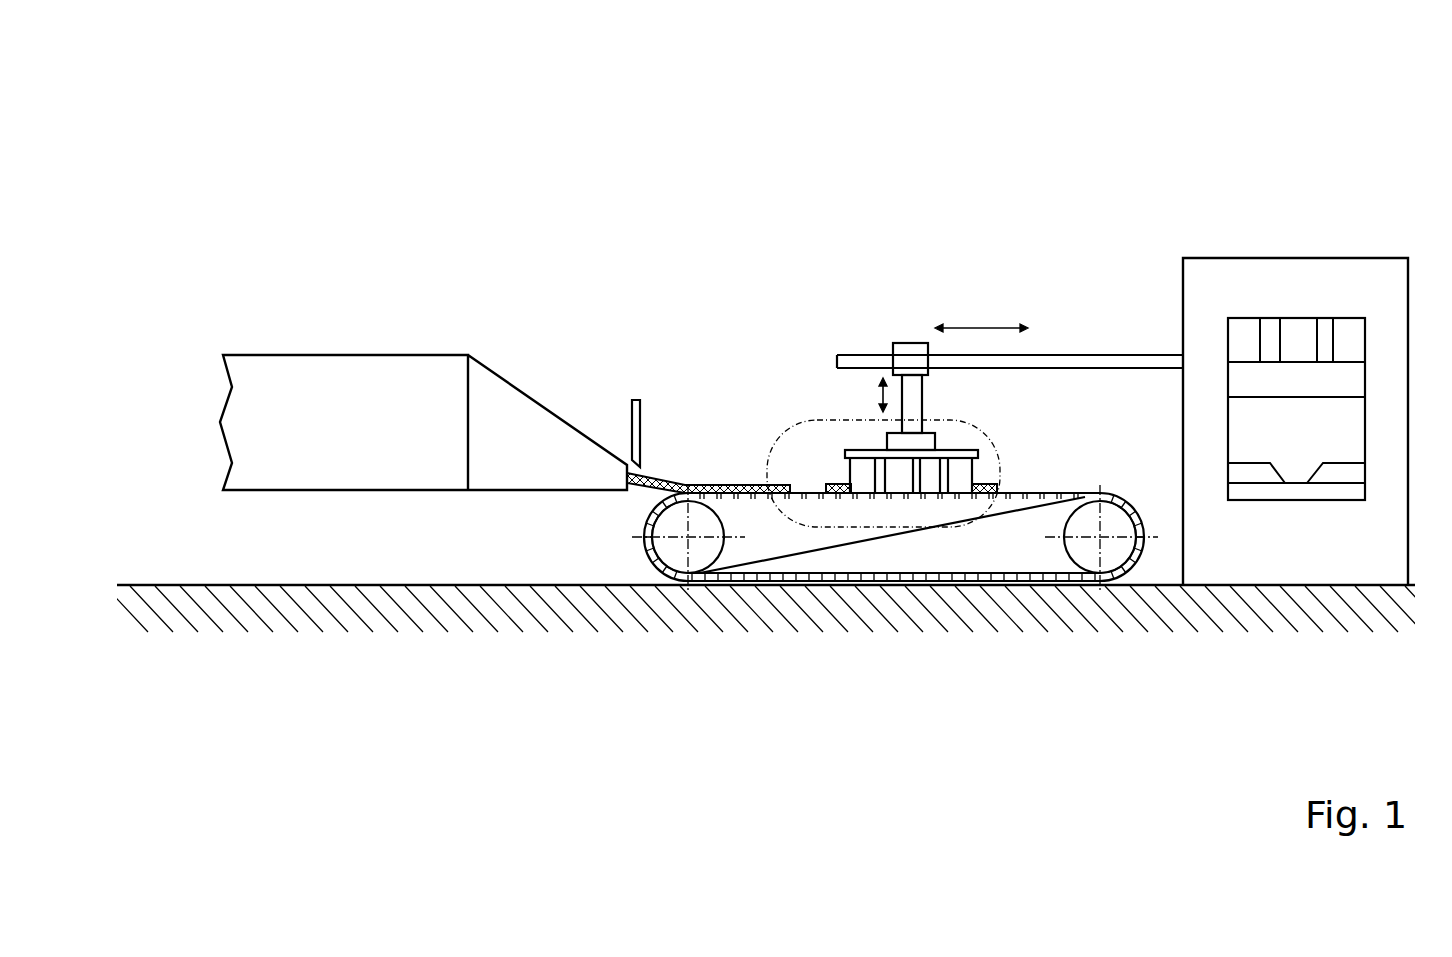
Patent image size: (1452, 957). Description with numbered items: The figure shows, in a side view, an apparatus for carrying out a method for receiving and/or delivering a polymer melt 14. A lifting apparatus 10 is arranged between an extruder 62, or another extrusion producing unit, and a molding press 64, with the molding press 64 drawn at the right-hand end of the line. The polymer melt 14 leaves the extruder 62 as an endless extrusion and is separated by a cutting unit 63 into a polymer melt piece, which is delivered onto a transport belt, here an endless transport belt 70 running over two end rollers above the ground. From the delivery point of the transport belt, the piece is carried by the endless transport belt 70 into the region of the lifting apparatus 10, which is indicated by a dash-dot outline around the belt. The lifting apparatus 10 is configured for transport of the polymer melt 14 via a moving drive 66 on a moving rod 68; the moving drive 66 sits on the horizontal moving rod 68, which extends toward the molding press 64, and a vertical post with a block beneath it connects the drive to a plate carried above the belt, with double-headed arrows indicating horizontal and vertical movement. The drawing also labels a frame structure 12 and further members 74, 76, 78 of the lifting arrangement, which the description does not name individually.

The lifting apparatus 10 is at (997, 286).
The mold frame 12 is at (860, 470).
The polymer melt 14 is at (683, 490).
The extruder 62 is at (333, 342).
The cutting unit 63 is at (633, 423).
The molding press 64 is at (1327, 252).
The moving drive 66 is at (902, 362).
The moving rod 68 is at (1090, 360).
The endless transport belt 70 is at (838, 575).
The carrier plate 74 is at (977, 450).
The mounting block 76 is at (903, 443).
The column 78 is at (910, 393).